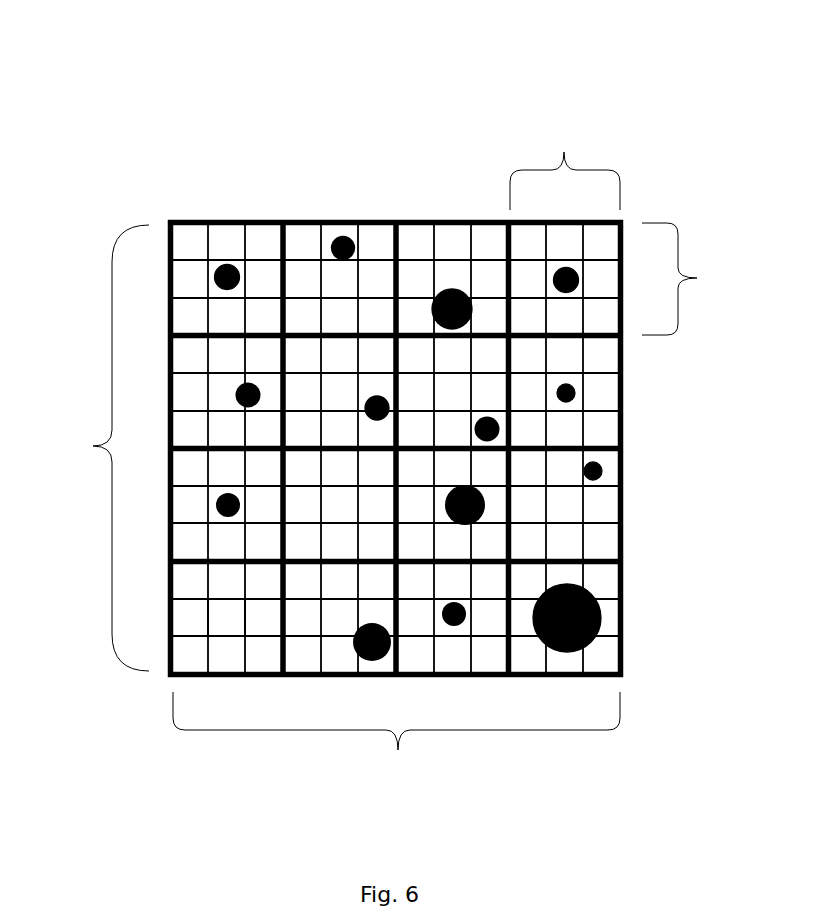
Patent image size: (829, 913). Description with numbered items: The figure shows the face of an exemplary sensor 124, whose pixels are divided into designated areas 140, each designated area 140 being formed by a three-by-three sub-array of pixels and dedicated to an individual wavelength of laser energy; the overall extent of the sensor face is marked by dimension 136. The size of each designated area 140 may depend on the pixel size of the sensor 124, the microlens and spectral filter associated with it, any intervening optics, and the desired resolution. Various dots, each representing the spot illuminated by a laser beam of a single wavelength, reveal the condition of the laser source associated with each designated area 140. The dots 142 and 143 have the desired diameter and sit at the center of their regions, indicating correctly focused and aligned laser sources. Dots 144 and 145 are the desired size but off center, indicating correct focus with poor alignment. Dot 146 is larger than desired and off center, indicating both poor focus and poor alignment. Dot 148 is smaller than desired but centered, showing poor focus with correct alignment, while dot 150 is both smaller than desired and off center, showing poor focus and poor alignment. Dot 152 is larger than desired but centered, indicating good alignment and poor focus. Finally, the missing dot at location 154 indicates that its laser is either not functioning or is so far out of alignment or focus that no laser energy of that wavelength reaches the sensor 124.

The sensor 124 is at (307, 222).
The grid side length 136 is at (316, 527).
The designated area 140 is at (647, 200).
The dot 142 is at (573, 292).
The dot 143 is at (224, 265).
The dot 144 is at (343, 237).
The dot 145 is at (378, 396).
The dot 146 is at (452, 289).
The dot 148 is at (570, 402).
The dot 150 is at (597, 479).
The dot 152 is at (593, 648).
The location of missing dot 154 is at (232, 616).